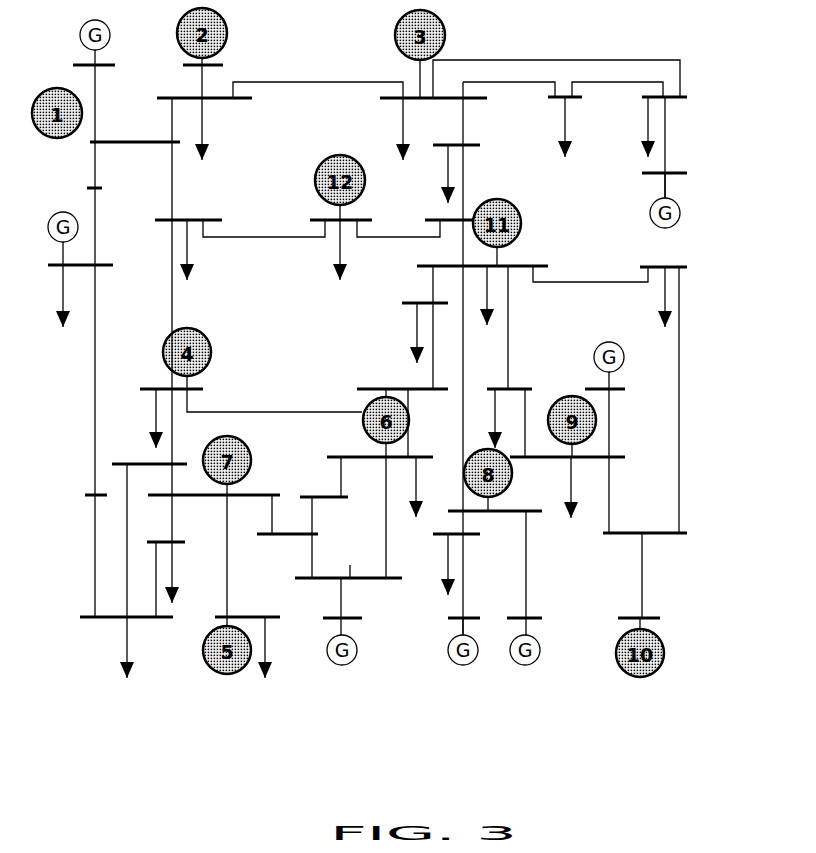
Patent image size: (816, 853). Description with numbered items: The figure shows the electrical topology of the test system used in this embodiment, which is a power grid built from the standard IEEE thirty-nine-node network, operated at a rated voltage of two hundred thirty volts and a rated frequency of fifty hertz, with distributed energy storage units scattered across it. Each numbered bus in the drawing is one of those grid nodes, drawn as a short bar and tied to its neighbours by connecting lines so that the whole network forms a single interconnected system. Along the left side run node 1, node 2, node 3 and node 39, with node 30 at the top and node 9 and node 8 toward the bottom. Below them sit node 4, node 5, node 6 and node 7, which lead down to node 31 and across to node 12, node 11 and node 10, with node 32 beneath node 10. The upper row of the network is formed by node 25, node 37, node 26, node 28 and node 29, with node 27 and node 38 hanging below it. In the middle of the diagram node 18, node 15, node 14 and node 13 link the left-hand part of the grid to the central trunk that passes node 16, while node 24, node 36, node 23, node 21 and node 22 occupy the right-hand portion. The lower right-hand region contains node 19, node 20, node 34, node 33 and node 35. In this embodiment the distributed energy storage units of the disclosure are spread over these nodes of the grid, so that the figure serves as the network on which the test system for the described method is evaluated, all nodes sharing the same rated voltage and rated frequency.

The node 1 is at (85, 188).
The node 2 is at (129, 142).
The node 3 is at (199, 212).
The node 4 is at (194, 389).
The node 5 is at (157, 453).
The node 6 is at (214, 482).
The node 7 is at (177, 540).
The node 8 is at (123, 604).
The node 9 is at (90, 482).
The node 10 is at (361, 578).
The node 11 is at (306, 534).
The node 12 is at (340, 497).
The node 13 is at (362, 457).
The node 14 is at (389, 387).
The node 15 is at (412, 303).
The node 16 is at (498, 267).
The node 18 is at (358, 212).
The node 19 is at (497, 495).
The node 20 is at (469, 534).
The node 21 is at (649, 258).
The node 22 is at (632, 533).
The node 23 is at (583, 457).
The node 24 is at (525, 378).
The node 25 is at (219, 98).
The node 26 is at (418, 98).
The node 27 is at (472, 145).
The node 28 is at (550, 97).
The node 29 is at (650, 97).
The node 30 is at (111, 65).
The node 31 is at (261, 617).
The node 32 is at (357, 618).
The node 33 is at (539, 618).
The node 34 is at (477, 618).
The node 35 is at (652, 618).
The node 36 is at (619, 389).
The node 37 is at (217, 65).
The node 38 is at (649, 173).
The node 39 is at (92, 265).